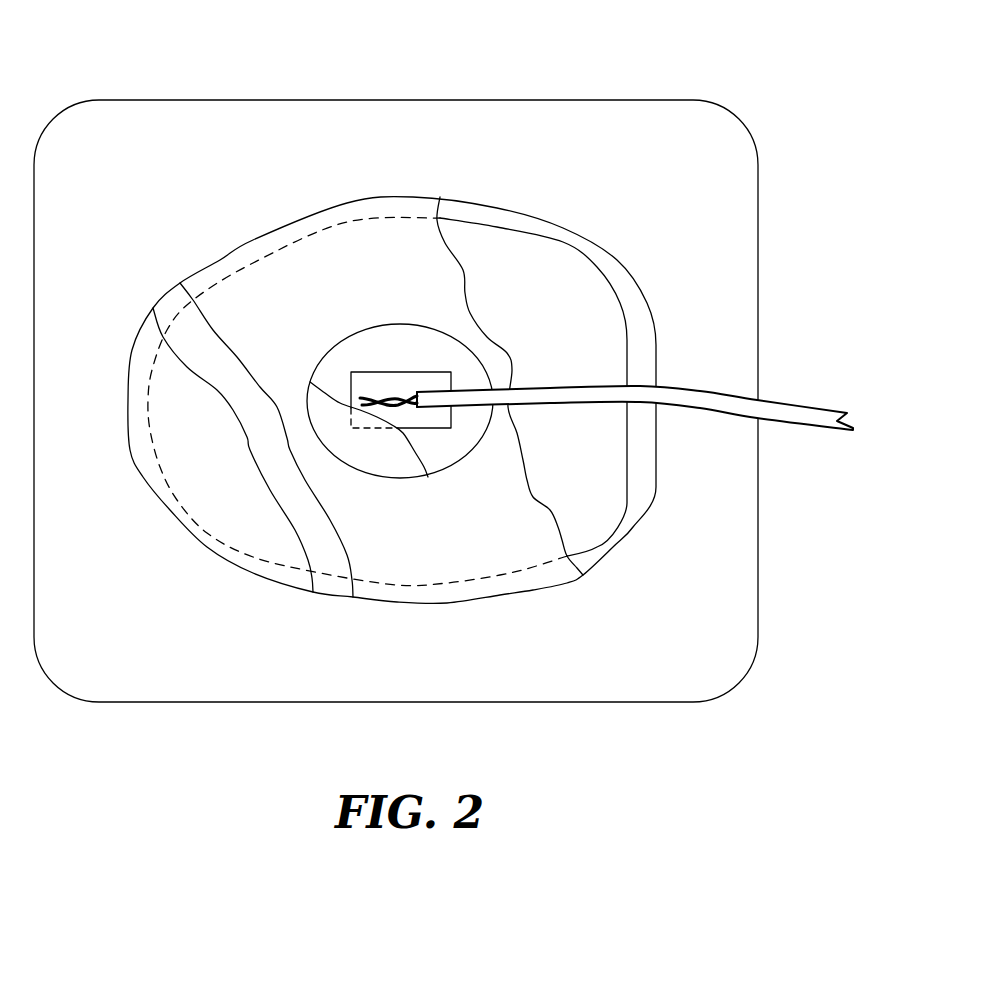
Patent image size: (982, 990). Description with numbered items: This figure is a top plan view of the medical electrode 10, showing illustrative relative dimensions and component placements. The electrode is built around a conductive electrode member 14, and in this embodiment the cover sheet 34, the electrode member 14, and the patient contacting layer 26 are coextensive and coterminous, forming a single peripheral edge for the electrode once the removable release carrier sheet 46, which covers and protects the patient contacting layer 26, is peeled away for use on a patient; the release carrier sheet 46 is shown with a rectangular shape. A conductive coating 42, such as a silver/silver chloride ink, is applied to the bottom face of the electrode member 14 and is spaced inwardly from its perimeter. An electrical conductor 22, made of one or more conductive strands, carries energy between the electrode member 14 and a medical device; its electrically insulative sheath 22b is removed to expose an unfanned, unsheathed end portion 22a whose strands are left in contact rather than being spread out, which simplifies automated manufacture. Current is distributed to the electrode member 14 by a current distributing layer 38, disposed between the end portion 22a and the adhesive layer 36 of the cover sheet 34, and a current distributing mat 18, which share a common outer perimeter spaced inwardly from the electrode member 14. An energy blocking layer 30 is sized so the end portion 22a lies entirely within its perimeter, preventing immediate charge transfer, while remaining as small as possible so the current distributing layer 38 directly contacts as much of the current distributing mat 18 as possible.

The medical electrode 10 is at (443, 369).
The conductive electrode member 14 is at (433, 568).
The current distributing mat 18 is at (377, 342).
The electrical conductor 22 is at (710, 408).
The unfanned, unsheathed end portion 22a is at (363, 380).
The electrically insulative sheath 22b is at (433, 403).
The patient contacting layer 26 is at (635, 298).
The energy blocking layer 30 is at (398, 391).
The cover sheet 34 is at (209, 458).
The adhesive layer 36 is at (216, 366).
The current distributing layer 38 is at (386, 466).
The conductive coating 42 is at (526, 283).
The release carrier sheet 46 is at (683, 181).